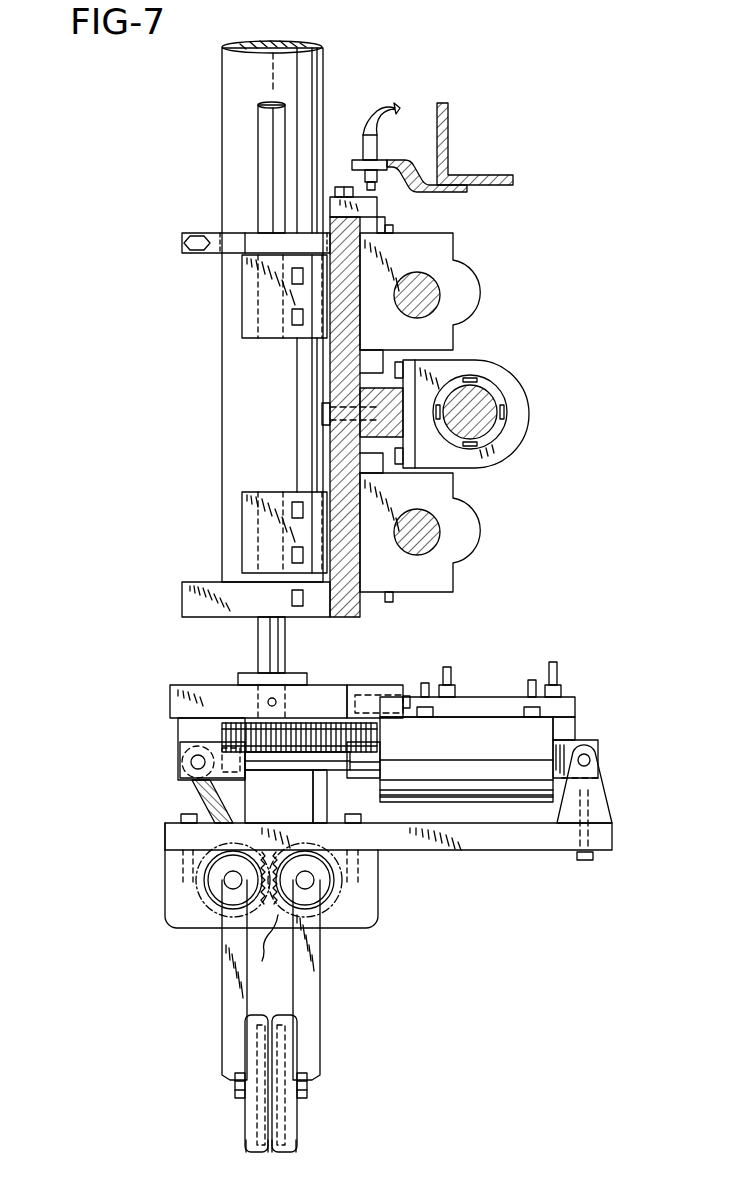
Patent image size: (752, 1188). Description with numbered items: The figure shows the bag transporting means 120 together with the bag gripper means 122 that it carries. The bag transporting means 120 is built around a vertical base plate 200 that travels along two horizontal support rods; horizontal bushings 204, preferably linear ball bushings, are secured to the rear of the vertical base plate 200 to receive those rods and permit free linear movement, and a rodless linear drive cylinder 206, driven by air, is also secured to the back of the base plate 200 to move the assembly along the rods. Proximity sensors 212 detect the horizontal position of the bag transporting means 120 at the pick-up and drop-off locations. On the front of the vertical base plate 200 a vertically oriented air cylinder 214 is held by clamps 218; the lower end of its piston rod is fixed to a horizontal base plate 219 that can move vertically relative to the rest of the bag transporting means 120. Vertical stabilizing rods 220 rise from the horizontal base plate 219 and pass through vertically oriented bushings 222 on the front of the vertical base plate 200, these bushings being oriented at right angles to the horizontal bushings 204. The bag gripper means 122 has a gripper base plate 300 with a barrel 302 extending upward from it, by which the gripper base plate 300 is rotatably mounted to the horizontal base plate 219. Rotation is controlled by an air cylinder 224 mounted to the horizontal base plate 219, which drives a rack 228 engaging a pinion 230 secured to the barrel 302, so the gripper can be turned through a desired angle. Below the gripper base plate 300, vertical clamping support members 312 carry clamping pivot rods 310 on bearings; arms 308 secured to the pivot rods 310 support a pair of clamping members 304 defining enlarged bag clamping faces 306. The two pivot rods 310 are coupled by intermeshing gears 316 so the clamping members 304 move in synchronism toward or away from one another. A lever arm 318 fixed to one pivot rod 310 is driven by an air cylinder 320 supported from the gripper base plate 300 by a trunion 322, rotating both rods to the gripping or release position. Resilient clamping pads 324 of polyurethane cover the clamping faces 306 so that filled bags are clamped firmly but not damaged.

The bag transporting means 120 is at (116, 531).
The bag gripper means 122 is at (512, 954).
The vertical base plate 200 is at (358, 608).
The horizontal bushings 204 is at (447, 254).
The rodless linear drive cylinder 206 is at (503, 382).
The proximity sensors 212 is at (363, 145).
The vertically oriented air cylinder 214 is at (232, 92).
The clamps 218 is at (191, 233).
The horizontal base plate 219 is at (172, 703).
The vertical stabilizing rods 220 is at (262, 143).
The vertically oriented bushings 222 is at (245, 334).
The air cylinder 224 is at (473, 707).
The rack 228 is at (337, 727).
The pinion 230 is at (277, 745).
The gripper base plate 300 is at (172, 829).
The barrel 302 is at (304, 812).
The clamping members 304 is at (248, 1131).
The bag clamping faces 306 is at (258, 1035).
The arms 308 is at (223, 958).
The clamping pivot rods 310 is at (228, 882).
The vertical clamping support members 312 is at (360, 908).
The intermeshing gears 316 is at (277, 951).
The lever arm 318 is at (200, 792).
The air cylinder 320 is at (512, 787).
The trunion 322 is at (605, 800).
The resilient clamping pads 324 is at (255, 1110).